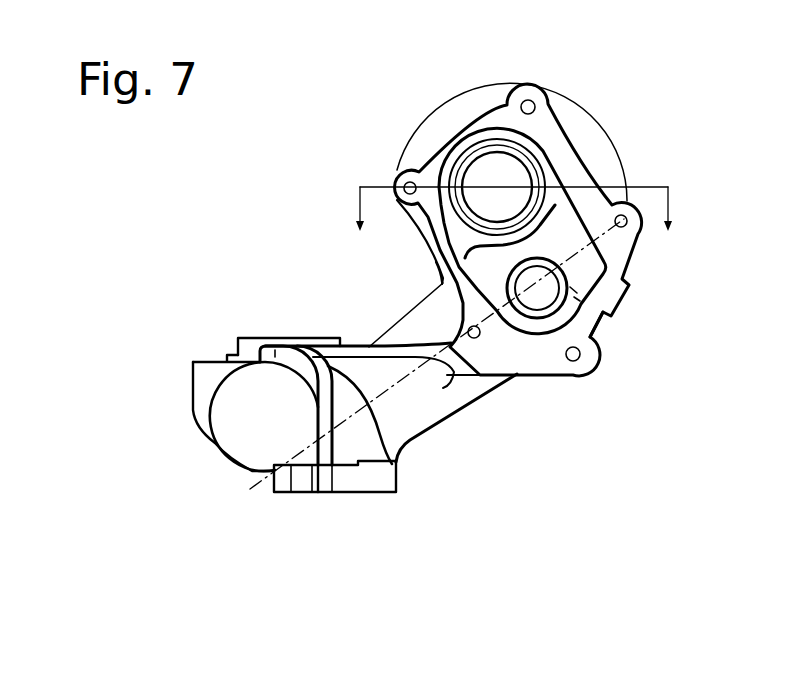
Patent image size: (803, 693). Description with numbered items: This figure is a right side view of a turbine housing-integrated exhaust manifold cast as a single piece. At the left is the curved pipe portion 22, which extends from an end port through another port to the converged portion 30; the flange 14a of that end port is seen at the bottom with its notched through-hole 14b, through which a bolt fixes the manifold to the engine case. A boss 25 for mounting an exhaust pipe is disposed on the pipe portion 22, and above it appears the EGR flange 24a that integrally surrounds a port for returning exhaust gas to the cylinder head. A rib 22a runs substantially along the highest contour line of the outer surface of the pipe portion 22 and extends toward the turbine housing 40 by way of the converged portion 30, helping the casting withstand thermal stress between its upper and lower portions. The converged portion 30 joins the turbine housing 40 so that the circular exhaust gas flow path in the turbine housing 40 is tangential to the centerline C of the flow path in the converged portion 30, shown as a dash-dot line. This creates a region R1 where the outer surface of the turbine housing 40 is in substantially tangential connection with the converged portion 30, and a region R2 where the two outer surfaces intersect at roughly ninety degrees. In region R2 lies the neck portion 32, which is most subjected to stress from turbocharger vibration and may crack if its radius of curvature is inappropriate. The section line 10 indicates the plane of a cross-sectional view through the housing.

The turbine housing 40 is at (453, 121).
The section line 10- 10 is at (515, 221).
The neck portion 32 is at (441, 281).
The region R2 is at (430, 272).
The region R1 is at (604, 334).
The centerline C is at (491, 320).
The converged portion 30 is at (427, 391).
The EGR flange 24a is at (250, 342).
The rib 22a is at (346, 350).
The boss 25 is at (207, 371).
The pipe portion 22 is at (247, 407).
The through-hole 14b is at (298, 483).
The flange 14a is at (372, 485).